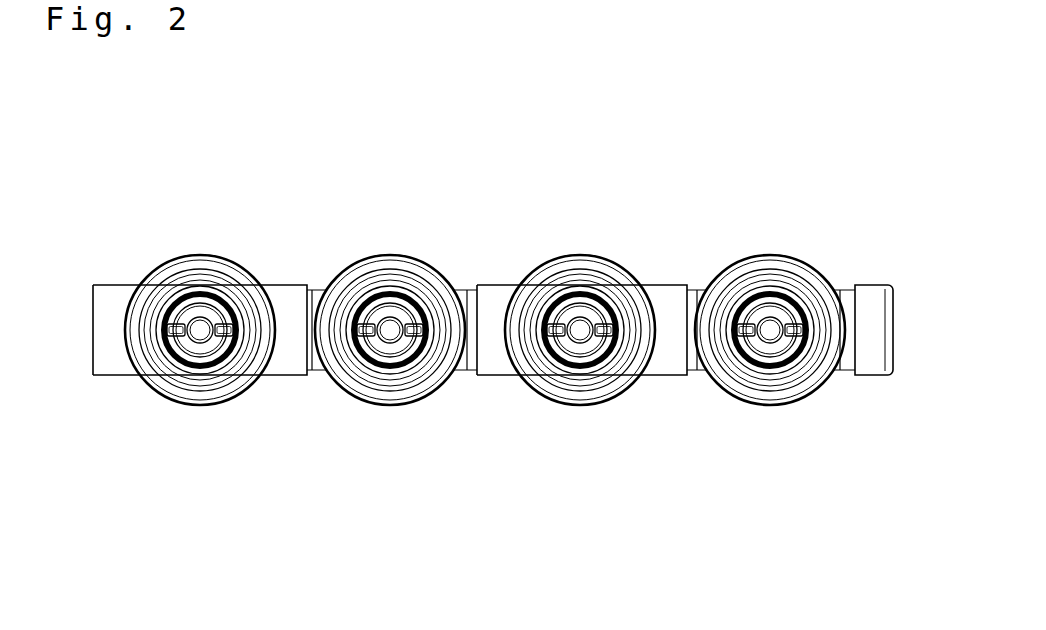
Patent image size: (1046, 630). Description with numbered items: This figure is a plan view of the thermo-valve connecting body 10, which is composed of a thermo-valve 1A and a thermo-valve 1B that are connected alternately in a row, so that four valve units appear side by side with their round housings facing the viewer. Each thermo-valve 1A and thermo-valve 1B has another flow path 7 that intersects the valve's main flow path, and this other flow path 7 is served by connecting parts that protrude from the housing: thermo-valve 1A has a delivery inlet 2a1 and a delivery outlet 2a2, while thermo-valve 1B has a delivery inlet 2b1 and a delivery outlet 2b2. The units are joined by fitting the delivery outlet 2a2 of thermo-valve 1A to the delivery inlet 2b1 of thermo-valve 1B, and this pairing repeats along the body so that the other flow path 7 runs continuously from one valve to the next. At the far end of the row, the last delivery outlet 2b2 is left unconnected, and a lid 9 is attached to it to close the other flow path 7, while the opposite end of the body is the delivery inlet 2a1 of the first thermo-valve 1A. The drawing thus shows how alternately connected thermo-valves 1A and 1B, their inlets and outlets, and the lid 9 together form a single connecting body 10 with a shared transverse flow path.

The thermo-valve connecting body 10 is at (152, 139).
The thermo-valve 1A is at (417, 272).
The thermo-valve 1B is at (609, 272).
The another flow path 7 is at (92, 317).
The delivery inlet 2a1 is at (92, 347).
The delivery outlet 2a2 is at (282, 362).
The delivery inlet 2b1 is at (317, 363).
The delivery outlet 2b2 is at (467, 370).
The lid 9 is at (895, 327).